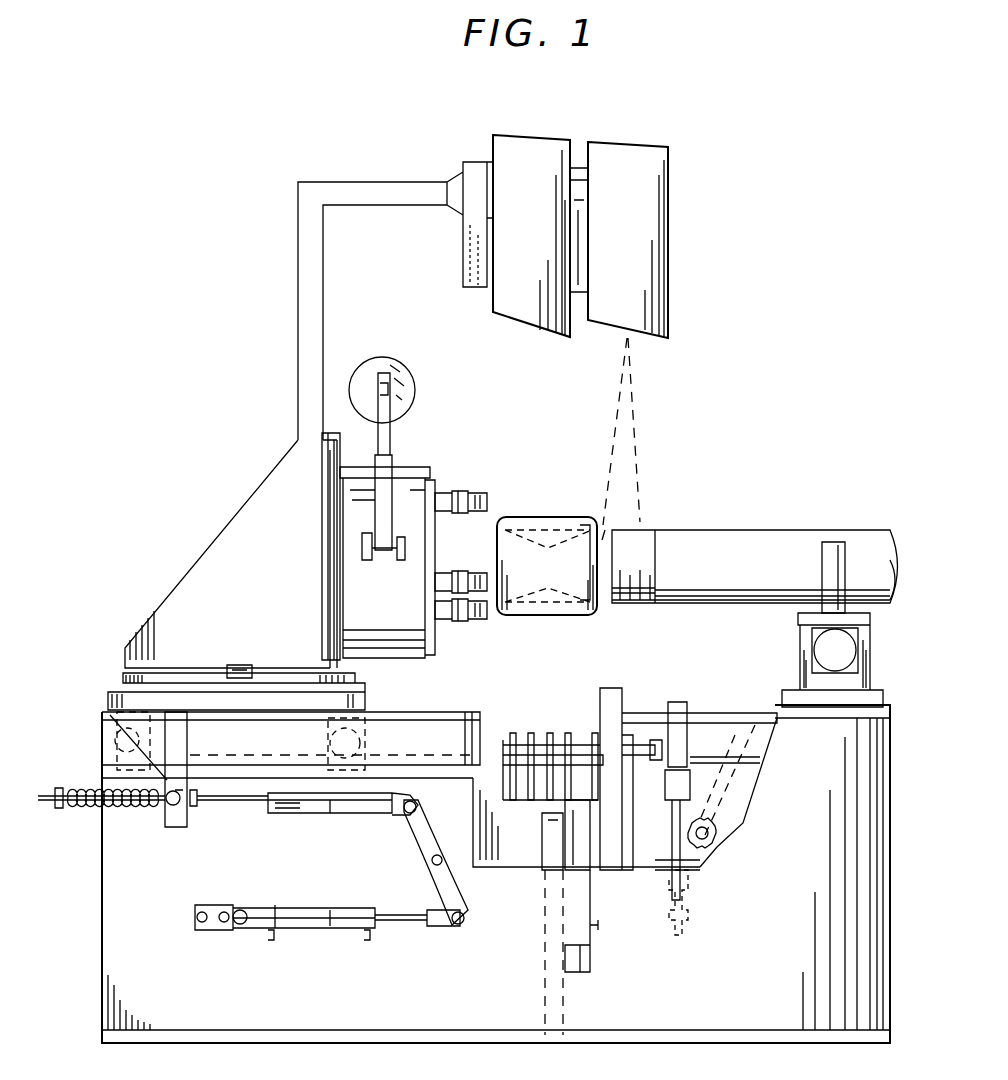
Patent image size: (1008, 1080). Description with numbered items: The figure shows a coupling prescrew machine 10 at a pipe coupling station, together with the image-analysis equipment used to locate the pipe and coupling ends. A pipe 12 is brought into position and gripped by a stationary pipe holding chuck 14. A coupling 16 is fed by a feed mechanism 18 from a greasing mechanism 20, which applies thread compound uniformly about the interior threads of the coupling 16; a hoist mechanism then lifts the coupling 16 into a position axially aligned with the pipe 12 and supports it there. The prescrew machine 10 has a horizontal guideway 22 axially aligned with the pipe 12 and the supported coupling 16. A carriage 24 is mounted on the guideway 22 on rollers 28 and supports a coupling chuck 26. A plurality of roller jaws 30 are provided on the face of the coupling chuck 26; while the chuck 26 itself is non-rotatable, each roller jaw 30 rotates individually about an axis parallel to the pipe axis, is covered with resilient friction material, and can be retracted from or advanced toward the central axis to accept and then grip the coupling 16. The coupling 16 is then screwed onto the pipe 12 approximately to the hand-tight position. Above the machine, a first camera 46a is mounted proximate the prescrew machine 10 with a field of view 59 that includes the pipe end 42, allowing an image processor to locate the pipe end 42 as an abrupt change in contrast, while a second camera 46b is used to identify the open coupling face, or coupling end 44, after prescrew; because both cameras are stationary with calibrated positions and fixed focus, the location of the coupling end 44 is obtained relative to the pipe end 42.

The prescrew machine 10 is at (237, 506).
The pipe 12 is at (748, 537).
The stationary pipe holding chuck 14 is at (830, 540).
The coupling 16 is at (590, 517).
The feed mechanism 18 is at (545, 735).
The greasing mechanism 20 is at (492, 757).
The horizontal guideway 22 is at (422, 737).
The carriage 24 is at (123, 680).
The coupling chuck 26 is at (406, 472).
The rollers 28 is at (100, 736).
The roller jaws 30 is at (455, 491).
The pipe end 42 is at (605, 530).
The coupling end 44 is at (500, 517).
The first camera 46a is at (622, 153).
The second camera 46b is at (548, 150).
The field of view 59 is at (641, 435).